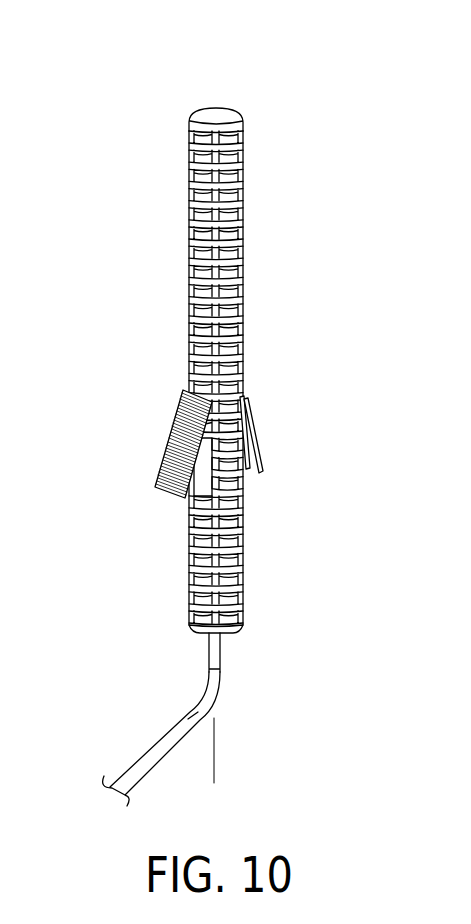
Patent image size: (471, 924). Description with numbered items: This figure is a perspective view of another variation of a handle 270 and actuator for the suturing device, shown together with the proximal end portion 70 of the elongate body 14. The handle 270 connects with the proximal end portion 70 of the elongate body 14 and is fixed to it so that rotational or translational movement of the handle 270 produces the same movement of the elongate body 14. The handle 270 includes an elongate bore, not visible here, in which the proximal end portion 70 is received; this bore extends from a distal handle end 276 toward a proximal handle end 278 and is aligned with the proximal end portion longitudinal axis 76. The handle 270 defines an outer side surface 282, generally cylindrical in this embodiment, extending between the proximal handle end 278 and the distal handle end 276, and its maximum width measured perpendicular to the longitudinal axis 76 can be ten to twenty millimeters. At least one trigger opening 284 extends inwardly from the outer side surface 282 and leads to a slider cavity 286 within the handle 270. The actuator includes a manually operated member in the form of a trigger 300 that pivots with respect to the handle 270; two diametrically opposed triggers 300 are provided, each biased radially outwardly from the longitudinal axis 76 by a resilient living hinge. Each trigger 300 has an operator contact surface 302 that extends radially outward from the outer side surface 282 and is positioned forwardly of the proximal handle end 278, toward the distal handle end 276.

The elongate body 14 is at (124, 715).
The proximal end portion 70 is at (221, 660).
The proximal end portion longitudinal axis 76 is at (215, 755).
The handle 270 is at (274, 270).
The distal handle end 276 is at (226, 634).
The proximal handle end 278 is at (216, 112).
The outer side surface 282 is at (243, 312).
The trigger opening 284 is at (190, 512).
The slider cavity 286 is at (178, 434).
The trigger 300 is at (256, 452).
The operator contact surface 302 is at (252, 420).